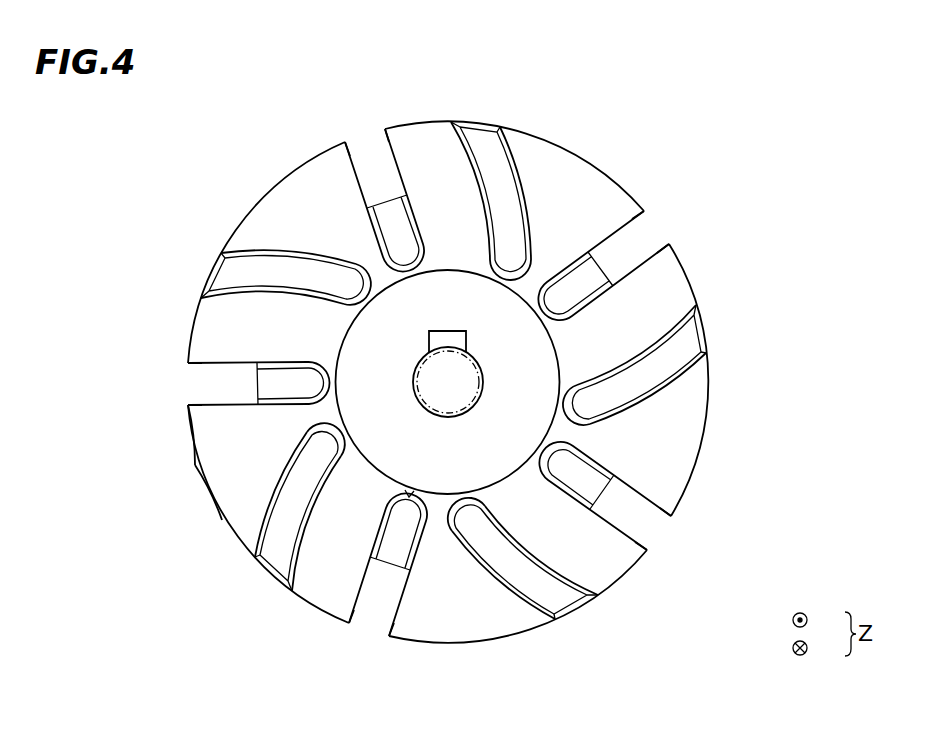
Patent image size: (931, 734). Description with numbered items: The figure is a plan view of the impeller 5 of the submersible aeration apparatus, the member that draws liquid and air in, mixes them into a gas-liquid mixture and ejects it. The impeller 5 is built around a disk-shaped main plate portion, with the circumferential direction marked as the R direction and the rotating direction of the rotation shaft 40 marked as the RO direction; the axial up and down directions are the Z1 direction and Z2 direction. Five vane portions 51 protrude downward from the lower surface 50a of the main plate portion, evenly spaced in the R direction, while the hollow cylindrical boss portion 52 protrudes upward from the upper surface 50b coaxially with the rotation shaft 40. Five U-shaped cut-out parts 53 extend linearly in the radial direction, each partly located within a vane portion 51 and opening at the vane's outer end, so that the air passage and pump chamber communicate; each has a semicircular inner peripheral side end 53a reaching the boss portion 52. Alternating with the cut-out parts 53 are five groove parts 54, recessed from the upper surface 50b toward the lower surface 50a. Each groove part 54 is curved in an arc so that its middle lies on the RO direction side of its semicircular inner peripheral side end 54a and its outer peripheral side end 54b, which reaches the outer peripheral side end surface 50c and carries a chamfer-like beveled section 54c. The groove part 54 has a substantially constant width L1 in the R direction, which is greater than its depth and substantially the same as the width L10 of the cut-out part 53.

The impeller 5 is at (150, 207).
The rotation shaft 40 is at (414, 372).
The lower surface 50a is at (215, 517).
The upper surface 50b is at (217, 456).
The outer peripheral side end surface 50c is at (200, 470).
The vane portion 51 is at (391, 187).
The boss portion 52 is at (557, 332).
The cut-out part 53 is at (347, 142).
The inner peripheral side end 53a is at (408, 489).
The groove part 54 is at (530, 210).
The inner peripheral side end 54a is at (505, 273).
The outer peripheral side end 54b is at (492, 124).
The beveled section 54c is at (461, 124).
The width of the groove part L1 is at (618, 368).
The width of the cut-out part L10 is at (633, 490).
The R direction R is at (727, 463).
The RO direction RO is at (500, 400).
The Z1 direction Z1 is at (816, 619).
The Z2 direction Z2 is at (816, 647).